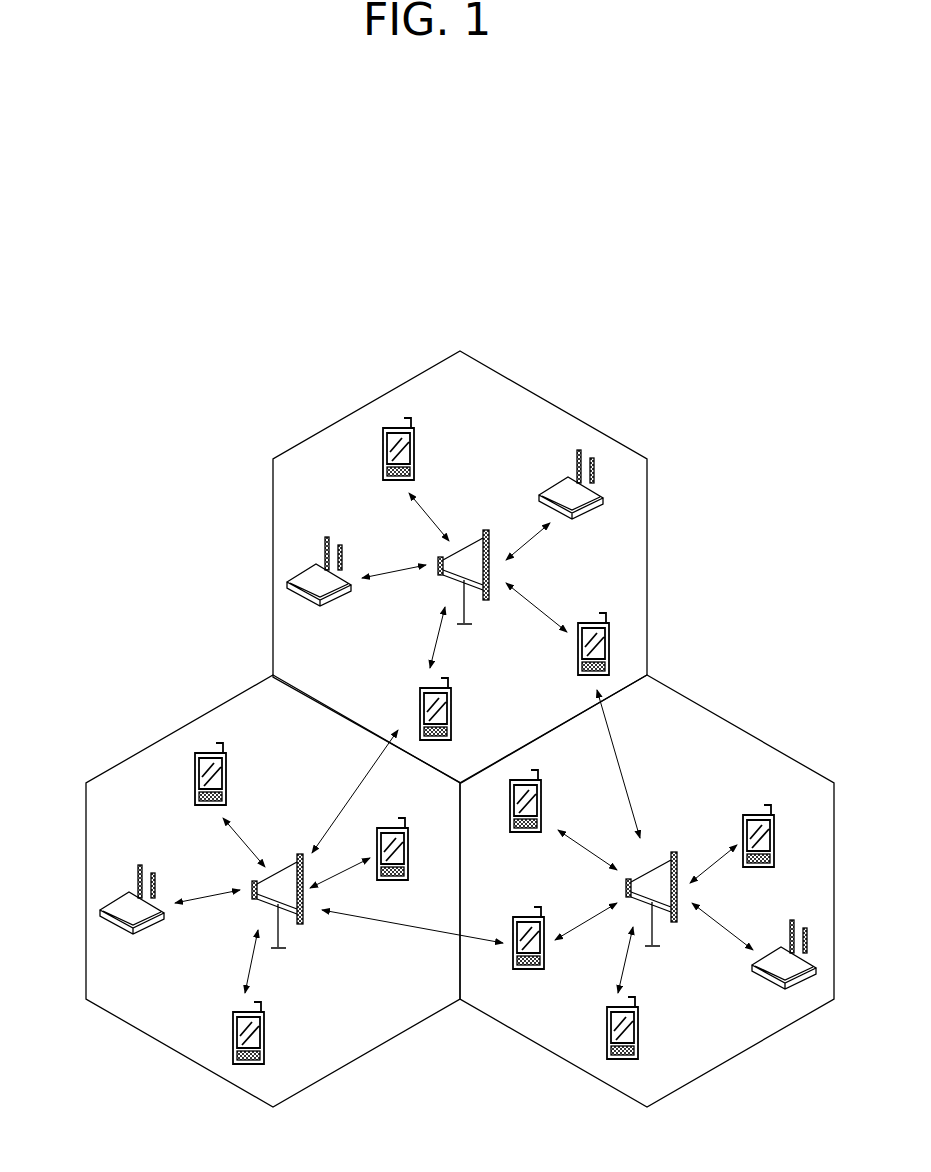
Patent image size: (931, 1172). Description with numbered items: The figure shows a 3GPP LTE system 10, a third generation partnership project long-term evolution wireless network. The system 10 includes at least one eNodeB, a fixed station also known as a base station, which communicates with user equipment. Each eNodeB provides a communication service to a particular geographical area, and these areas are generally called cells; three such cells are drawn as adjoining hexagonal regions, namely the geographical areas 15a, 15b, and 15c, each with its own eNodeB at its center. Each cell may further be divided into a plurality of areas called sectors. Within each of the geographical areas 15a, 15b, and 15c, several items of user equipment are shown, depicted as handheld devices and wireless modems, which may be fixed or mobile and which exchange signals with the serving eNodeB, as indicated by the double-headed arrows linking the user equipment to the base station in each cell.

The 3GPP LTE system 10 is at (460, 729).
The geographical area 15a is at (648, 553).
The geographical area 15b is at (775, 745).
The geographical area 15c is at (153, 745).